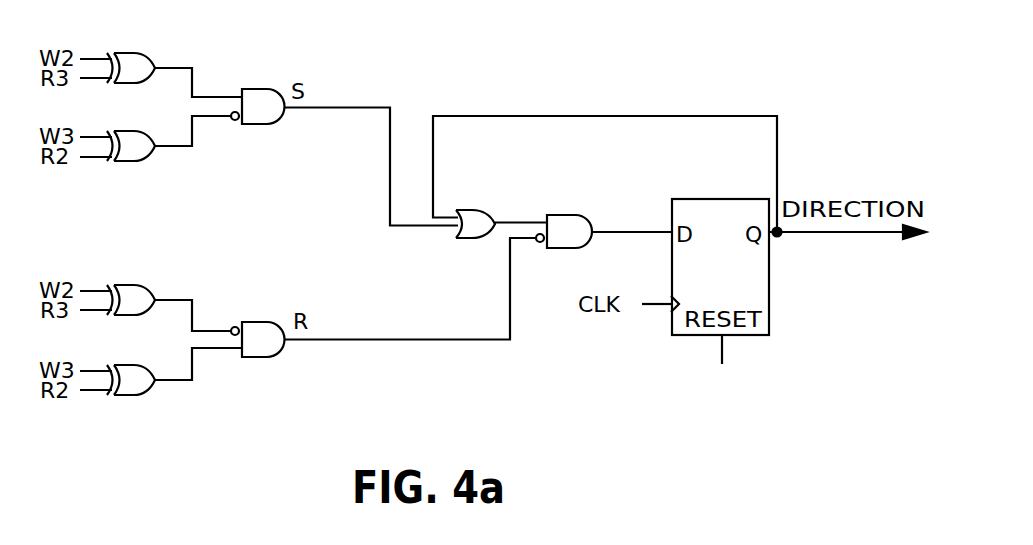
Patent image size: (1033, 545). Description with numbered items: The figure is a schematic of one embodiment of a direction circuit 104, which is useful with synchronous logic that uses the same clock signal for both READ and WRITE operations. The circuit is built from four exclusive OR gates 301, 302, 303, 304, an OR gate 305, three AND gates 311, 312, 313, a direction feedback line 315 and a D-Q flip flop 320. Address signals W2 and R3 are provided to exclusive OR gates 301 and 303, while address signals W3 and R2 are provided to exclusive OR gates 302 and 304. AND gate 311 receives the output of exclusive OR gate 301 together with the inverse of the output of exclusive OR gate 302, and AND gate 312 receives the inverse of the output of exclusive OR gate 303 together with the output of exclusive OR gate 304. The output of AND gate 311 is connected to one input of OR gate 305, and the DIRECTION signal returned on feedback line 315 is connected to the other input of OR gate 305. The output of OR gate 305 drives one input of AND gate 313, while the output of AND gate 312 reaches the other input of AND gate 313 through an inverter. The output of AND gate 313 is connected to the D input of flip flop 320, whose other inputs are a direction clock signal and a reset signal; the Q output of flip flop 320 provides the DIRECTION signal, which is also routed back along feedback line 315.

The direction circuit 104 is at (657, 63).
The exclusive OR gate 301 is at (128, 52).
The exclusive OR gate 302 is at (134, 162).
The exclusive OR gate 303 is at (129, 285).
The exclusive OR gate 304 is at (140, 395).
The OR gate 305 is at (480, 209).
The AND gate 311 is at (262, 125).
The AND gate 312 is at (262, 358).
The AND gate 313 is at (577, 214).
The direction feedback line 315 is at (513, 115).
The D-Q flip flop 320 is at (720, 198).